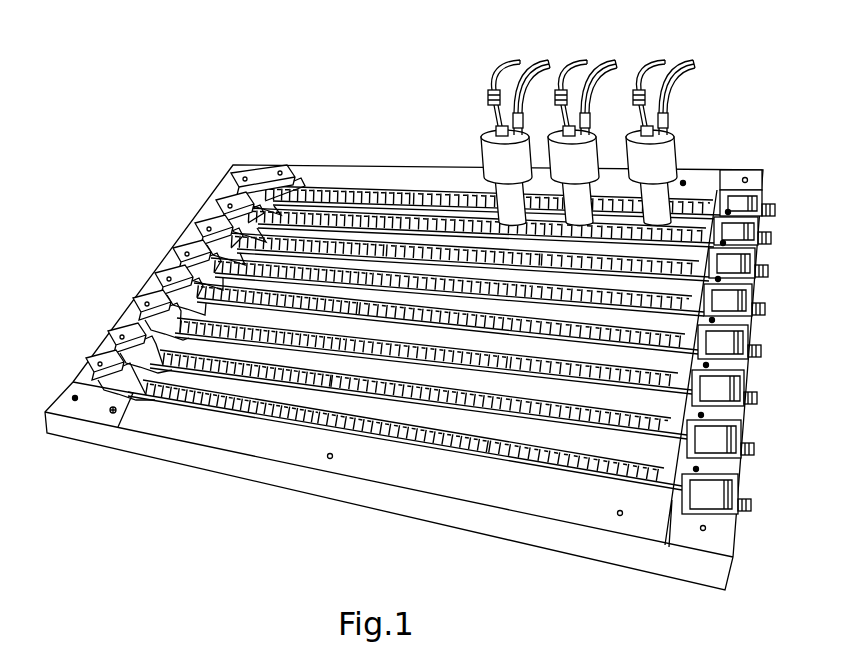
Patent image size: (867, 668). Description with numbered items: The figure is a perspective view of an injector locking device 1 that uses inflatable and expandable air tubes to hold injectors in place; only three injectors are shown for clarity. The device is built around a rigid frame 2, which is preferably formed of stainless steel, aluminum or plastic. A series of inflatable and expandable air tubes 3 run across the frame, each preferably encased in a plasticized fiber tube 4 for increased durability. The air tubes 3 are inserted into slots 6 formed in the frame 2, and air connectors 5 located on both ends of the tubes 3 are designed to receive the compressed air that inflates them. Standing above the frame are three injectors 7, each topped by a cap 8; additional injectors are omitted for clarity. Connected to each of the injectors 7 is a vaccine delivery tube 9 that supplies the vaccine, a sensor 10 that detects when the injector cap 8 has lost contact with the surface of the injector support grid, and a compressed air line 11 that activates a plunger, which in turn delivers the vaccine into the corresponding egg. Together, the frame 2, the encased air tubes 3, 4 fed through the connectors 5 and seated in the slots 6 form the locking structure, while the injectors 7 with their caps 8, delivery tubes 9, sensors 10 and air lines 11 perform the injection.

The injector locking device 1 is at (163, 426).
The rigid frame 2 is at (469, 484).
The inflatable and expandable air tubes 3 is at (287, 187).
The plasticized fiber tubes 4 is at (322, 190).
The air connectors 5 is at (143, 318).
The slots 6 is at (80, 376).
The injectors 7 is at (658, 205).
The caps 8 is at (667, 155).
The vaccine delivery tube 9 is at (489, 91).
The sensor 10 is at (662, 128).
The compressed air line 11 is at (503, 135).